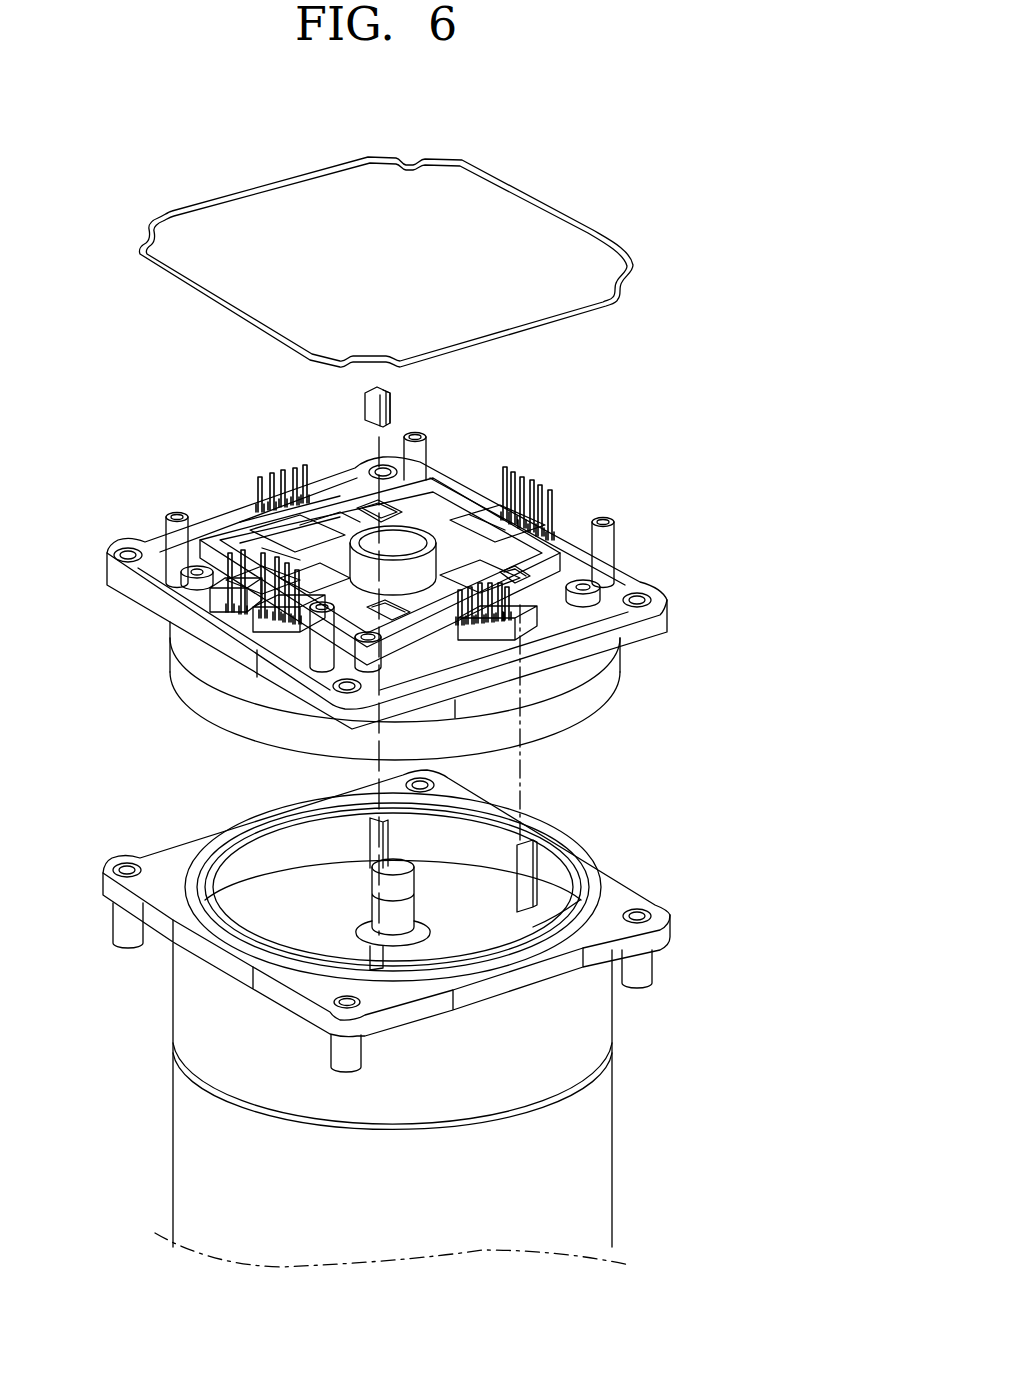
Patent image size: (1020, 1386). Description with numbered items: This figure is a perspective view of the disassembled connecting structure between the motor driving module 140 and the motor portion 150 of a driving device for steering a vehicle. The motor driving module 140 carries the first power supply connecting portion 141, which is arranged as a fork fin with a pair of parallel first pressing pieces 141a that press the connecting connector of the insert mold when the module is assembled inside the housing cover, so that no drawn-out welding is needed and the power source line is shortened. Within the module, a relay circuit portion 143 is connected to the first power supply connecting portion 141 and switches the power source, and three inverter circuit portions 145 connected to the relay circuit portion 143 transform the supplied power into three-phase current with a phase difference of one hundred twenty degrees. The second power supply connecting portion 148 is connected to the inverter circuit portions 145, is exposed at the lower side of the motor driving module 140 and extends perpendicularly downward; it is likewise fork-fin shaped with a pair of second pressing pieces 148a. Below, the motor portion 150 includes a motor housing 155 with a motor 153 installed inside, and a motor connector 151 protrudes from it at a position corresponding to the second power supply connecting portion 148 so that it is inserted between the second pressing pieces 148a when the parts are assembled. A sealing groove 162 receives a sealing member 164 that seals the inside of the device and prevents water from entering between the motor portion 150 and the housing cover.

The motor driving module 140 is at (672, 578).
The first power supply connecting portion 141 is at (235, 610).
The first pressing pieces 141a is at (245, 575).
The relay circuit portion 143 is at (365, 646).
The inverter circuit portions 145 is at (262, 530).
The second power supply connecting portion 148 is at (405, 402).
The second pressing pieces 148a is at (398, 414).
The motor portion 150 is at (675, 1036).
The motor connector 151 is at (523, 860).
The motor 153 is at (533, 927).
The motor housing 155 is at (580, 1147).
The sealing groove 162 is at (648, 612).
The sealing member 164 is at (610, 248).